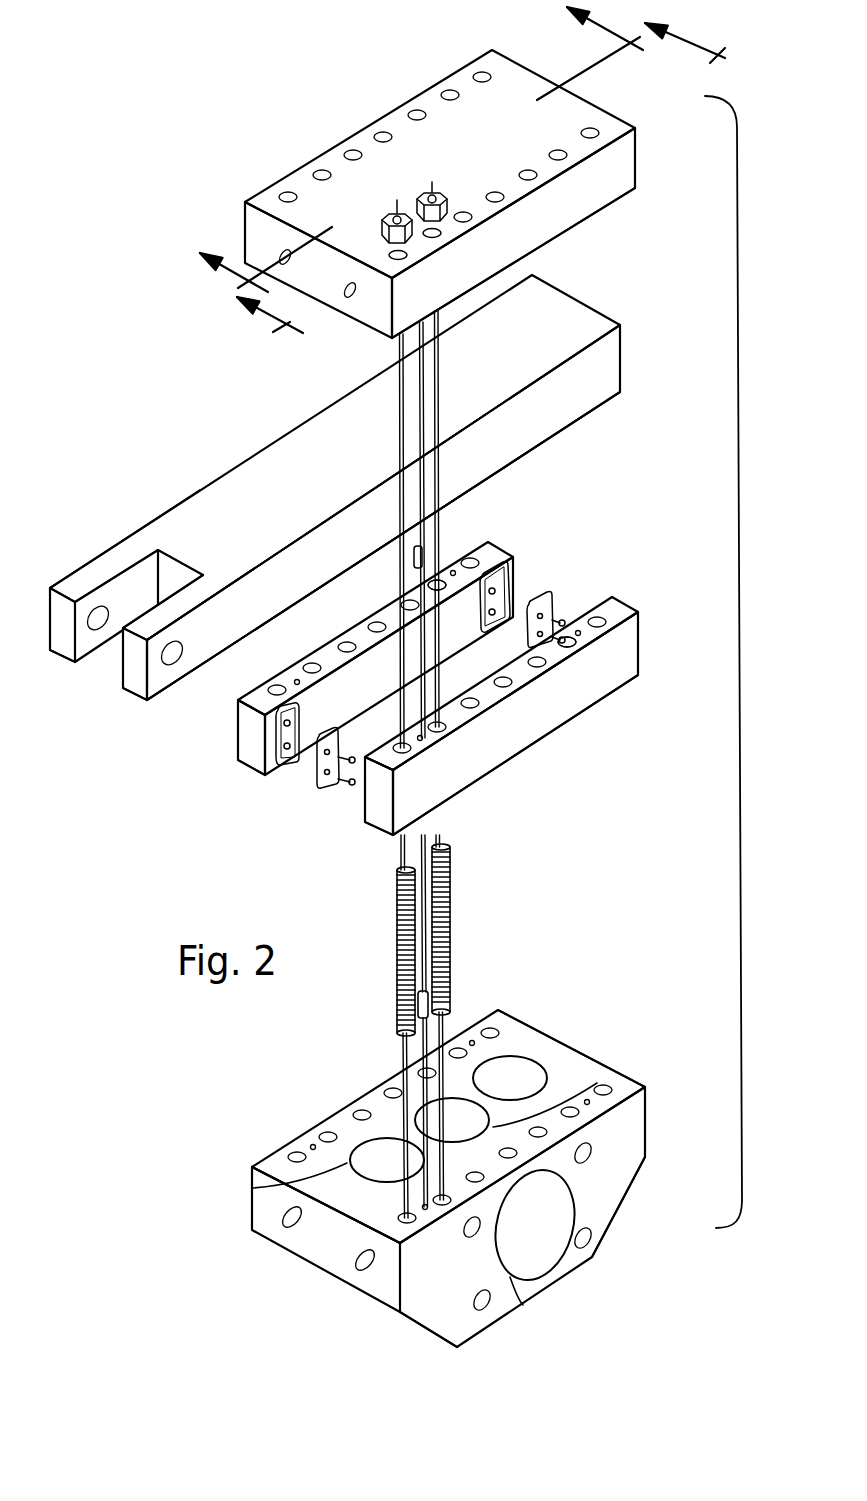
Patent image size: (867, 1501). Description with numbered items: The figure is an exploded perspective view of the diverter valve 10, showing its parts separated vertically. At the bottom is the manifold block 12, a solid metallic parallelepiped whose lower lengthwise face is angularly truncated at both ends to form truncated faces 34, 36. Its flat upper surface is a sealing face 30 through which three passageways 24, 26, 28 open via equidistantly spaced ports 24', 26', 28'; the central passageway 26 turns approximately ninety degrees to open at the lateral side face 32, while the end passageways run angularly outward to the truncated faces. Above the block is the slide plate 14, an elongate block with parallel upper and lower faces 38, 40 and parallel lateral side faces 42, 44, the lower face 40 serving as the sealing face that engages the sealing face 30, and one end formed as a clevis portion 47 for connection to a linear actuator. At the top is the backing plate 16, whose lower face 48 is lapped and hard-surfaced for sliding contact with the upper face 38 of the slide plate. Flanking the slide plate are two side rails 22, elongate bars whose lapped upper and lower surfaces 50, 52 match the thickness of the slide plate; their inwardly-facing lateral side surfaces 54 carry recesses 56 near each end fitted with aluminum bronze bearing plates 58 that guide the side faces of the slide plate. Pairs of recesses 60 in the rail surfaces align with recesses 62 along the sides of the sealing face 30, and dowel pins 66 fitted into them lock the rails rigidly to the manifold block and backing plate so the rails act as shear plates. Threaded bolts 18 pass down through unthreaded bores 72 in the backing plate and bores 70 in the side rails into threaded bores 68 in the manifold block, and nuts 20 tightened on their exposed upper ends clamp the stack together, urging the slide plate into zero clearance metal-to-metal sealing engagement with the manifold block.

The diverter valve 10 is at (752, 662).
The manifold block 12 is at (315, 1237).
The slide plate 14 is at (567, 408).
The backing plate 16 is at (613, 180).
The bolts 18 is at (453, 920).
The nuts 20 is at (438, 199).
The side rails 22 is at (620, 675).
The passageway 24 is at (368, 1118).
The port 24' is at (266, 1182).
The central passageway 26 is at (550, 1233).
The port 26' is at (575, 1080).
The passageway 28 is at (531, 1043).
The port 28' is at (484, 1045).
The sealing face 30 is at (360, 1214).
The lateral side face 32 is at (600, 1177).
The truncated face 34 is at (412, 1325).
The truncated face 36 is at (610, 1228).
The upper face 38 is at (505, 377).
The lower face 40 is at (508, 467).
The lateral side face 42 is at (530, 435).
The lateral side face 44 is at (179, 504).
The clevis portion 47 is at (152, 668).
The lower face 48 is at (588, 217).
The upper surface 50 is at (330, 648).
The lower surface 52 is at (440, 668).
The inwardly-facing lateral side surface 54 is at (377, 697).
The recess 56 is at (520, 590).
The bearing plate 58 is at (550, 608).
The recesses 60 is at (590, 643).
The recesses 62 is at (472, 1042).
The dowel pins 66 is at (417, 562).
The threaded bores 68 is at (326, 1135).
The unthreaded bores 70 is at (438, 583).
The unthreaded bores 72 is at (478, 72).